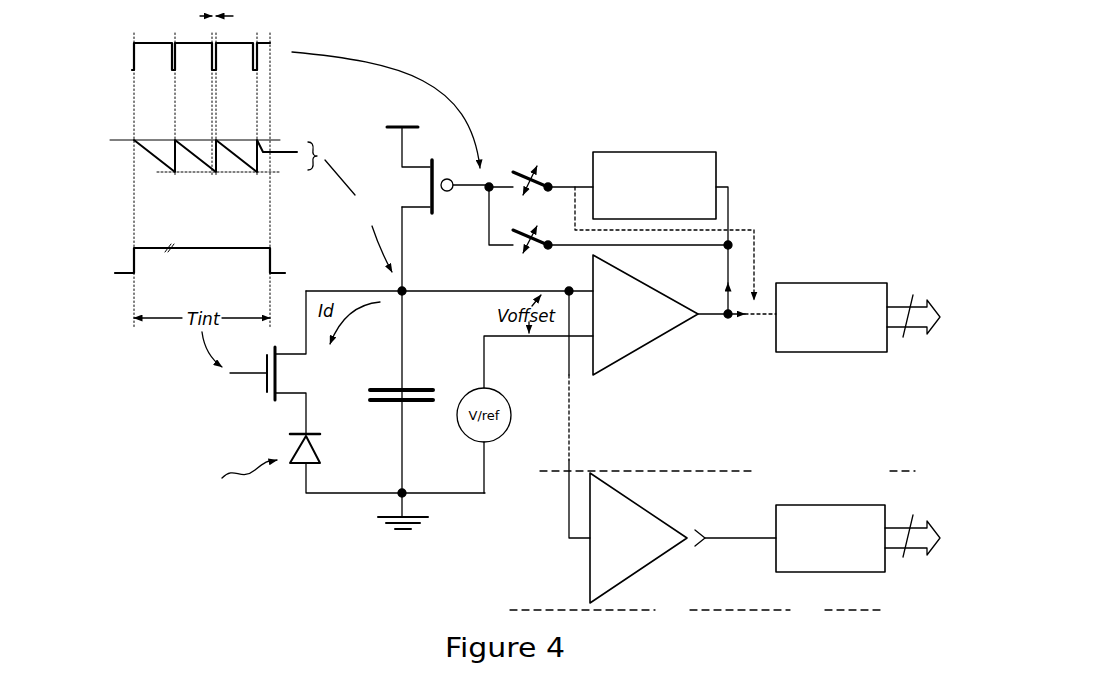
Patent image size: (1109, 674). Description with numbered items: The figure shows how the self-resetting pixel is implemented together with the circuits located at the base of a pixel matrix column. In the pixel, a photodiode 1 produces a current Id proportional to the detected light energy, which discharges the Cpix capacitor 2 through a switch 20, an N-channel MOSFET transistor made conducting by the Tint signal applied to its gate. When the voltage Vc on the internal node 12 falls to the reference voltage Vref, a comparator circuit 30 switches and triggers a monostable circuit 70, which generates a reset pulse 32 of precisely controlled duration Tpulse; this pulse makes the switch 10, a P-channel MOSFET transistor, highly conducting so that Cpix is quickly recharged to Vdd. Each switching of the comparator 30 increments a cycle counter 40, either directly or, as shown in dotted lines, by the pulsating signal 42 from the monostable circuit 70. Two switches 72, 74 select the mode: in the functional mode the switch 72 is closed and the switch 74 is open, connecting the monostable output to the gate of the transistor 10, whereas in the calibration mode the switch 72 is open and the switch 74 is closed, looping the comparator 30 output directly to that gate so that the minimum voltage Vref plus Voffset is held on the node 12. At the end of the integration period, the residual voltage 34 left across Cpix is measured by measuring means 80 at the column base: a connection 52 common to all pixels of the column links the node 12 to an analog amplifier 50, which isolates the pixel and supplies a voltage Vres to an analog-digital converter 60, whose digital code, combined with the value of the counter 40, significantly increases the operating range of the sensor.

The photodiode 1 is at (315, 448).
The Cpix capacitor 2 is at (407, 386).
The switch 10 is at (434, 165).
The internal node 12 is at (405, 288).
The switch 20 is at (258, 396).
The comparator circuit 30 is at (636, 355).
The reset pulse 32 is at (162, 38).
The residual voltage 34 is at (290, 152).
The cycle counter 40 is at (817, 283).
The pulsating signal 42 is at (757, 245).
The analog amplifier 50 is at (634, 580).
The connection common to all the pixels of a column 52 is at (572, 412).
The analog-digital converter 60 is at (845, 573).
The monostable circuit 70 is at (655, 152).
The switch 72 is at (524, 162).
The switch 74 is at (520, 256).
The measuring means 80 is at (682, 473).